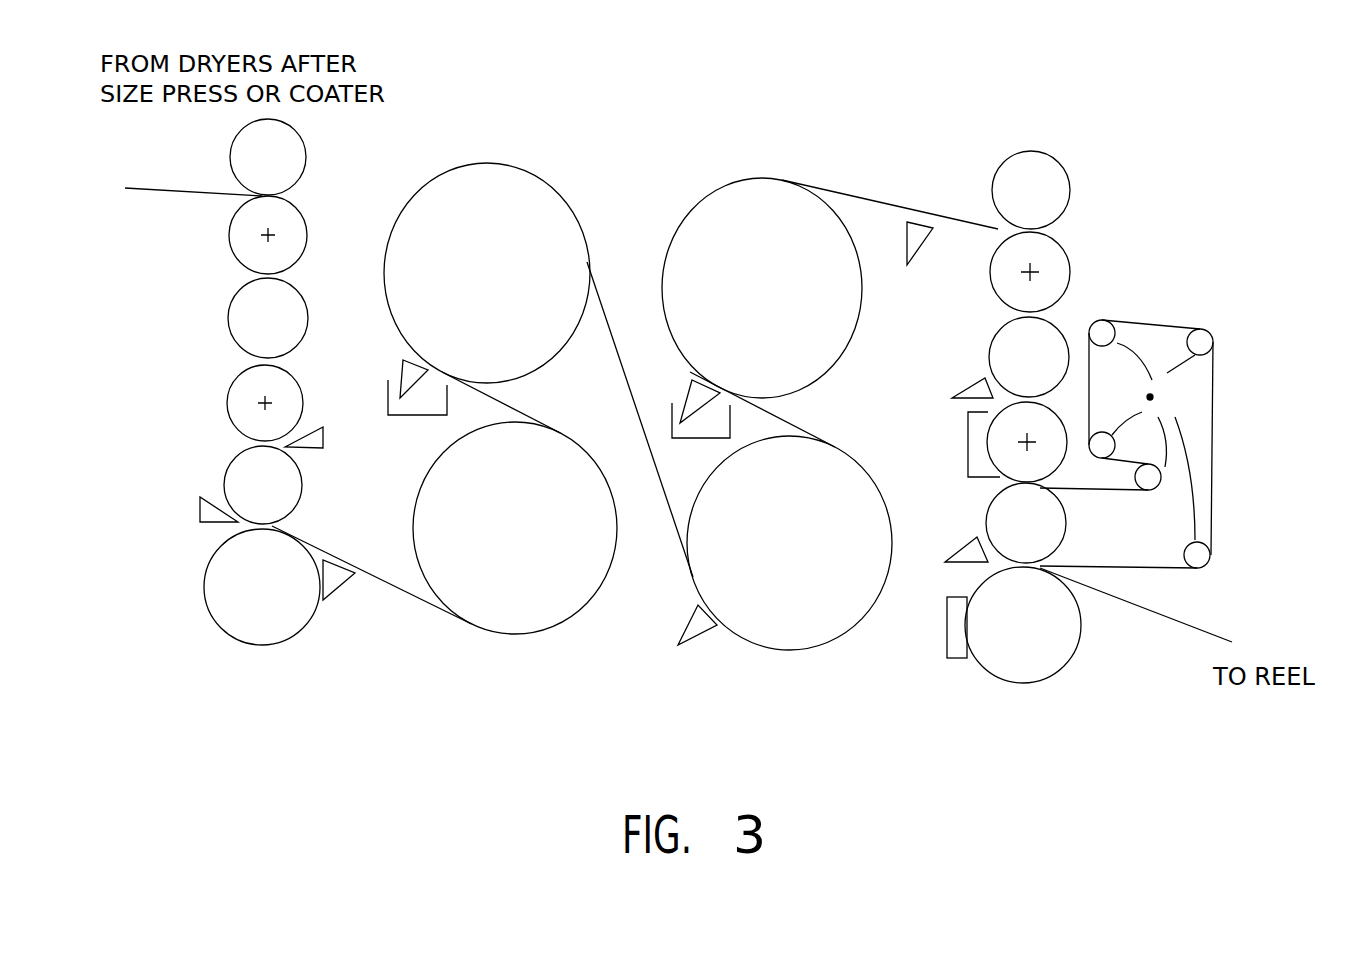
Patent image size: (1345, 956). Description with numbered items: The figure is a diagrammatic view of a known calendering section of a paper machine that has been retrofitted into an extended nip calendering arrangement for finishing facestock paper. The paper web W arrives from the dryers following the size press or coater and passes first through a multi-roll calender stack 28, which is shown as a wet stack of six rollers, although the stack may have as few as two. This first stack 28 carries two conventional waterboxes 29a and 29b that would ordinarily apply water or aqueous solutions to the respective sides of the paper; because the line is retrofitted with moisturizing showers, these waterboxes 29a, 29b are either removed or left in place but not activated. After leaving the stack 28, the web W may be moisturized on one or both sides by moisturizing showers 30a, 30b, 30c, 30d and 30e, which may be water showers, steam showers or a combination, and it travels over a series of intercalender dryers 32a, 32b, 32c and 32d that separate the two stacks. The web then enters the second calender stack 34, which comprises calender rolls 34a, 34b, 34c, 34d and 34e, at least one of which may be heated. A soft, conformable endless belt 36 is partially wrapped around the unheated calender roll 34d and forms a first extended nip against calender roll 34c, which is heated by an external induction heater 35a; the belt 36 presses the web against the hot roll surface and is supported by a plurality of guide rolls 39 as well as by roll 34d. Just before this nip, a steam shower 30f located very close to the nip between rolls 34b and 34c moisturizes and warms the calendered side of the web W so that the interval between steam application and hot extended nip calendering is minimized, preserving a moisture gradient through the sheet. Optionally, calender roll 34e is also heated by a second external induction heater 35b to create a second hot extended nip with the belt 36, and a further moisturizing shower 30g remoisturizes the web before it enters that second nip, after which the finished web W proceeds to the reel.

The first multi-roll calender stack 28 is at (233, 680).
The waterbox 29a is at (230, 518).
The waterbox 29b is at (307, 448).
The moisturizing shower 30a is at (337, 593).
The moisturizing shower 30b is at (403, 362).
The moisturizing shower 30c is at (690, 647).
The moisturizing shower 30d is at (687, 387).
The moisturizing shower 30e is at (917, 260).
The moisturizing shower 30f is at (977, 393).
The moisturizing shower 30g is at (950, 567).
The intercalender dryer 32a is at (420, 482).
The intercalender dryer 32b is at (517, 380).
The intercalender dryer 32c is at (782, 652).
The intercalender dryer 32d is at (810, 388).
The calender stack 34 is at (1077, 163).
The calender roll 34a is at (1000, 302).
The calender roll 34b is at (1055, 322).
The calender roll 34c is at (968, 462).
The calender roll 34d is at (1060, 545).
The calender roll 34e is at (1068, 655).
The external induction heater 35a is at (967, 427).
The external induction heater 35b is at (947, 640).
The endless belt 36 is at (1213, 510).
The guide rolls 39 is at (1150, 397).
The paper web W is at (620, 366).